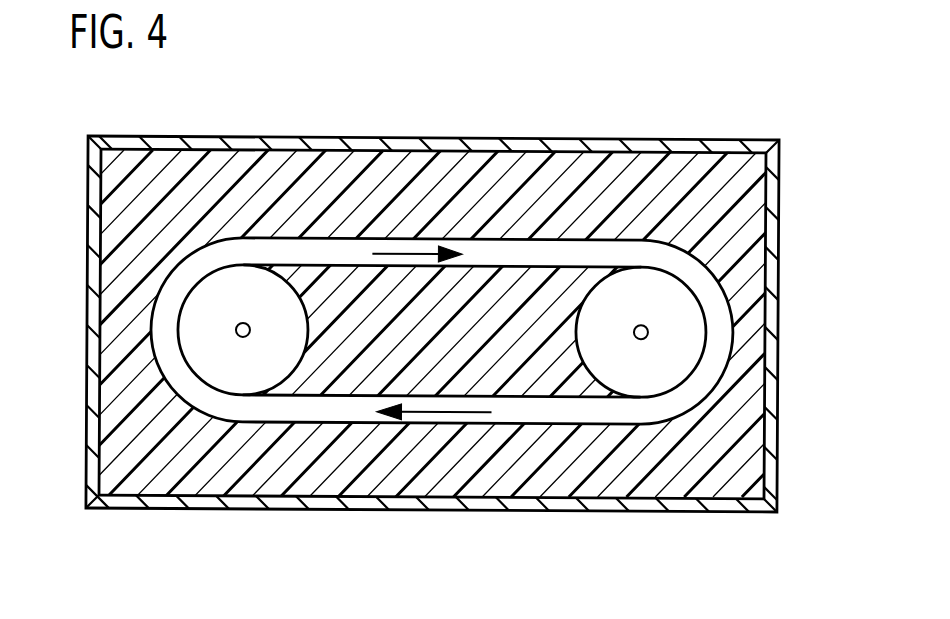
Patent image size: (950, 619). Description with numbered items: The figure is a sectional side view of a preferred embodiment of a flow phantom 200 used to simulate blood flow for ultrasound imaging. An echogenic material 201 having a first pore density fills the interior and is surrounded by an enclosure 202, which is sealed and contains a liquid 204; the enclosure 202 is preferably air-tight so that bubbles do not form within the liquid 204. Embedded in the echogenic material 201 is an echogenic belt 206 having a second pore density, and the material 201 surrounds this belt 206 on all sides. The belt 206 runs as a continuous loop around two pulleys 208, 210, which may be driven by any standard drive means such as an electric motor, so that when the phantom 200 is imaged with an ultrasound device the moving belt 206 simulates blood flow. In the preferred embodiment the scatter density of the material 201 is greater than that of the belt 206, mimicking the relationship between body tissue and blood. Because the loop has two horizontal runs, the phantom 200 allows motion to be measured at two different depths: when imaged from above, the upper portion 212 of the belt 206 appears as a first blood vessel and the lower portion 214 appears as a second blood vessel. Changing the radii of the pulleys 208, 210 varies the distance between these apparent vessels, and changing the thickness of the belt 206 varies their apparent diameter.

The flow phantom 200 is at (688, 132).
The echogenic material 201 is at (745, 436).
The enclosure 202 is at (692, 505).
The liquid 204 is at (185, 160).
The echogenic belt 206 is at (210, 402).
The pulley 208 is at (192, 340).
The pulley 210 is at (688, 308).
The upper portion of belt 212 is at (547, 247).
The lower portion of belt 214 is at (413, 425).